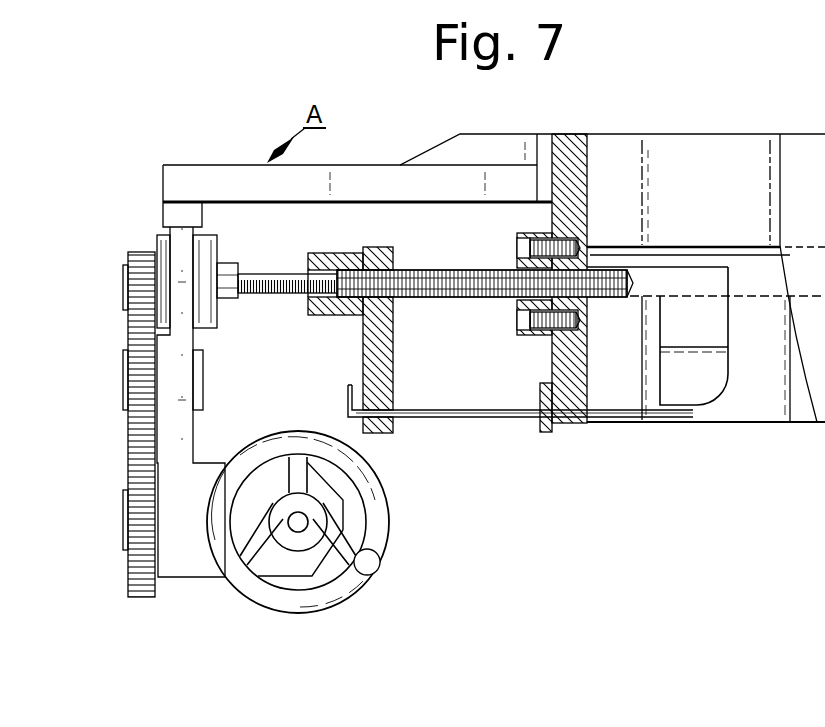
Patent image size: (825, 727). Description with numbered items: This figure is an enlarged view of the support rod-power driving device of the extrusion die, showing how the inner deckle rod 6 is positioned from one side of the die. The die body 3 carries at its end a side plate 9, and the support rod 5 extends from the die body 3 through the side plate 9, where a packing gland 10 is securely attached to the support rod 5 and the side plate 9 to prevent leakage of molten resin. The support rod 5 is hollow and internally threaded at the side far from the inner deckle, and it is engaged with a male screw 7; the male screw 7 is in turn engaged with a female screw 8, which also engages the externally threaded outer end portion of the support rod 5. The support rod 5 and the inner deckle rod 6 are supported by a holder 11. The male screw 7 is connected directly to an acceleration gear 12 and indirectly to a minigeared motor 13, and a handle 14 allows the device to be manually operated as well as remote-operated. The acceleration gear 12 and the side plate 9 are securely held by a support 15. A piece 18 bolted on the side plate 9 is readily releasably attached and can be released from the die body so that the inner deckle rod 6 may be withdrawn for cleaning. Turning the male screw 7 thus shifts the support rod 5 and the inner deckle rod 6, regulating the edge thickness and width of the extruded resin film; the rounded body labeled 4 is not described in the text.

The die body 3 is at (786, 108).
The bearing body 4 is at (707, 390).
The support rod 5 is at (652, 272).
The inner deckle rod 6 is at (487, 418).
The male screw 7 is at (265, 293).
The female screw 8 is at (327, 258).
The side plate 9 is at (570, 143).
The packing gland 10 is at (520, 235).
The holder 11 is at (385, 433).
The acceleration gear 12 is at (143, 267).
The minigeared motor 13 is at (200, 565).
The handle 14 is at (332, 590).
The support 15 is at (217, 178).
The piece 18 is at (545, 432).